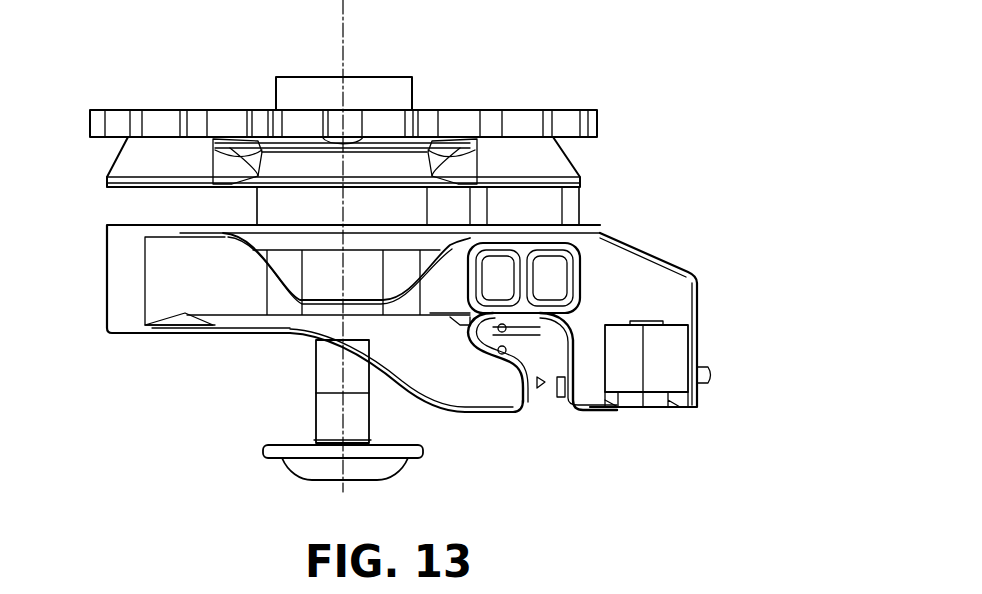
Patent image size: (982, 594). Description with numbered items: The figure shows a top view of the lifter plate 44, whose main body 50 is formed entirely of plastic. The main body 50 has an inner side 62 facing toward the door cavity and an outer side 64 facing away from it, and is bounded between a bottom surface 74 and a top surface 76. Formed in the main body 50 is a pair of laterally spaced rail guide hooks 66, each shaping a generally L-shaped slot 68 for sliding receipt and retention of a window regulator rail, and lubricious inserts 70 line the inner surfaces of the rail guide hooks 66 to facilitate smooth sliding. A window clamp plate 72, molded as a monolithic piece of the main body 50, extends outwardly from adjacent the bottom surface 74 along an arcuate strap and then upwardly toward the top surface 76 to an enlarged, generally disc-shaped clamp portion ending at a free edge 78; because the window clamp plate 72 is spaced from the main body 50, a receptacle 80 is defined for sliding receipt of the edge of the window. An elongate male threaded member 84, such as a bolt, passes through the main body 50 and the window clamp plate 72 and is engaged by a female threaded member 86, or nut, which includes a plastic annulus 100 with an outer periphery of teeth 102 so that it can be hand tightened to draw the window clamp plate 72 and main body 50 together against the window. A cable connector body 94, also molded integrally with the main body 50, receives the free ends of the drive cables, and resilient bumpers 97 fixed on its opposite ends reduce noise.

The lifter plate 44 is at (780, 276).
The main body 50 is at (705, 318).
The inner side 62 is at (450, 413).
The outer side 64 is at (590, 225).
The rail guide hooks 66 is at (513, 415).
The L-shaped slot 68 is at (544, 406).
The lubricious inserts 70 is at (575, 417).
The window clamp plate 72 is at (558, 151).
The bottom surface 74 is at (605, 255).
The top surface 76 is at (120, 242).
The free edge 78 is at (213, 150).
The receptacle 80 is at (135, 205).
The elongate male threaded member 84 is at (333, 418).
The female threaded member 86 is at (298, 90).
The cable connector body 94 is at (680, 420).
The resilient bumpers 97 is at (682, 343).
The plastic annulus 100 is at (512, 110).
The teeth 102 is at (585, 110).